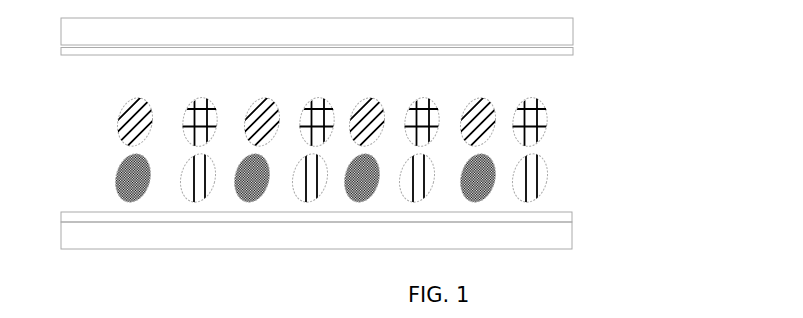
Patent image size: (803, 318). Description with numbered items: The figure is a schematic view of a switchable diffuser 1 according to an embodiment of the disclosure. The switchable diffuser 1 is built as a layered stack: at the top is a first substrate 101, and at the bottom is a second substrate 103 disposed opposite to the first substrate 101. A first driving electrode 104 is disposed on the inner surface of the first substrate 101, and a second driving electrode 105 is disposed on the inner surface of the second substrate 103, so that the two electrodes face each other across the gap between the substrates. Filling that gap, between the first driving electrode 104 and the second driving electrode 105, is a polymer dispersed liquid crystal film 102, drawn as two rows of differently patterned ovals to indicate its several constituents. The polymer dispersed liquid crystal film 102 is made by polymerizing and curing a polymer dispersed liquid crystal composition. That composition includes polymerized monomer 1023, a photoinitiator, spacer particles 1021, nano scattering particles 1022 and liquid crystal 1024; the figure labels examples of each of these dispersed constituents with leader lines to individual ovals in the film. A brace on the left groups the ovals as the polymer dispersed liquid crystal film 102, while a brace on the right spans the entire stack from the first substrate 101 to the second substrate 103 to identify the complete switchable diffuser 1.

The switchable diffuser 1 is at (399, 133).
The first substrate 101 is at (573, 33).
The first driving electrode 104 is at (573, 51).
The polymer dispersed liquid crystal film 102 is at (351, 135).
The liquid crystal 1024 is at (486, 98).
The polymerized monomer 1023 is at (546, 124).
The nano scattering particles 1022 is at (487, 158).
The spacer particles 1021 is at (546, 182).
The second driving electrode 105 is at (572, 218).
The second substrate 103 is at (572, 237).